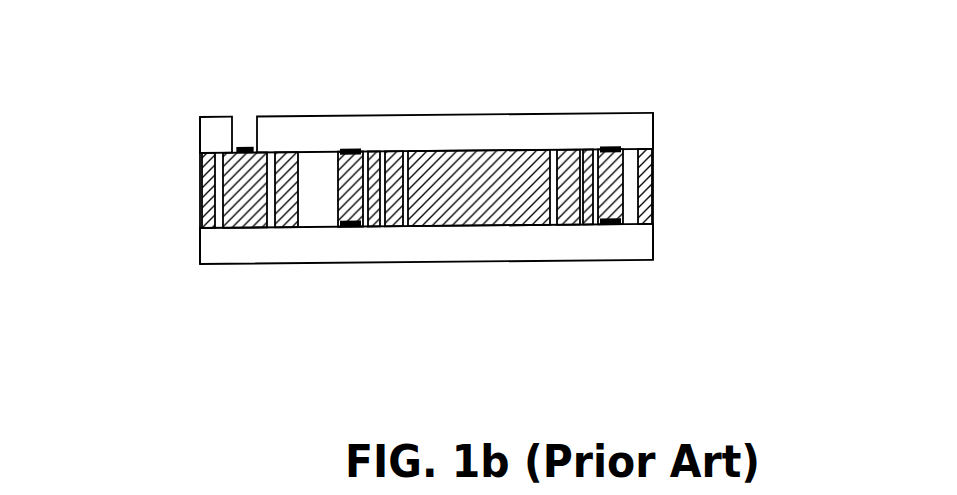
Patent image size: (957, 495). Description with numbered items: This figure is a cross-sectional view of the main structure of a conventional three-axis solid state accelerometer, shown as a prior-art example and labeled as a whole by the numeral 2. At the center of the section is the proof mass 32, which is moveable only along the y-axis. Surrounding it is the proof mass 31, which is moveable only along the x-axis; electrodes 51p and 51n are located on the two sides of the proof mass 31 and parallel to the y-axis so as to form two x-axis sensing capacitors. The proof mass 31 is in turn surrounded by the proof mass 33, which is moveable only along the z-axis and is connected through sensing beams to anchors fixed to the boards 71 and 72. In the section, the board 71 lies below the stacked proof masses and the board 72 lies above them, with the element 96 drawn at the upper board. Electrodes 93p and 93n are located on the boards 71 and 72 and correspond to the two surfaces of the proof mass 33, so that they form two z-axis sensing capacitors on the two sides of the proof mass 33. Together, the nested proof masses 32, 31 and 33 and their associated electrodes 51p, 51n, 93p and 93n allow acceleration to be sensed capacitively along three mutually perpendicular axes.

The housing 2 is at (652, 200).
The board 71 is at (217, 245).
The board 72 is at (212, 132).
The electrode 96 is at (240, 150).
The proof mass 33 is at (333, 172).
The electrode 93n is at (623, 160).
The electrode 93p is at (348, 227).
The electrode 51n is at (375, 160).
The proof mass 31 is at (403, 160).
The proof mass 32 is at (488, 167).
The electrode 51p is at (588, 153).